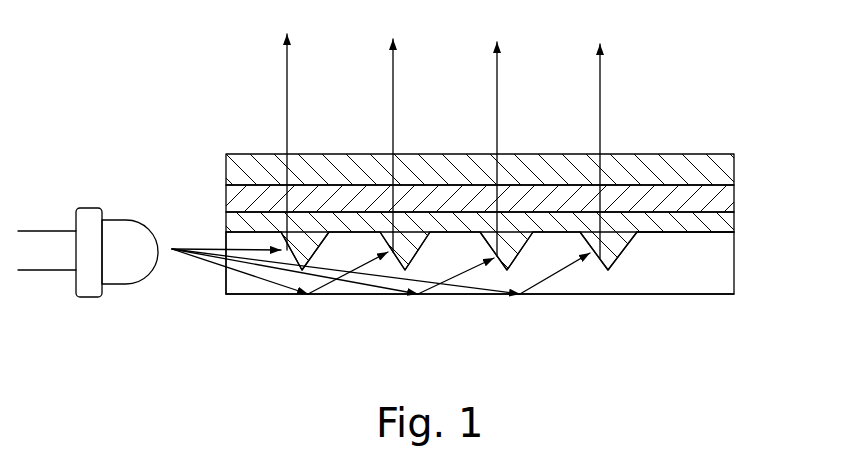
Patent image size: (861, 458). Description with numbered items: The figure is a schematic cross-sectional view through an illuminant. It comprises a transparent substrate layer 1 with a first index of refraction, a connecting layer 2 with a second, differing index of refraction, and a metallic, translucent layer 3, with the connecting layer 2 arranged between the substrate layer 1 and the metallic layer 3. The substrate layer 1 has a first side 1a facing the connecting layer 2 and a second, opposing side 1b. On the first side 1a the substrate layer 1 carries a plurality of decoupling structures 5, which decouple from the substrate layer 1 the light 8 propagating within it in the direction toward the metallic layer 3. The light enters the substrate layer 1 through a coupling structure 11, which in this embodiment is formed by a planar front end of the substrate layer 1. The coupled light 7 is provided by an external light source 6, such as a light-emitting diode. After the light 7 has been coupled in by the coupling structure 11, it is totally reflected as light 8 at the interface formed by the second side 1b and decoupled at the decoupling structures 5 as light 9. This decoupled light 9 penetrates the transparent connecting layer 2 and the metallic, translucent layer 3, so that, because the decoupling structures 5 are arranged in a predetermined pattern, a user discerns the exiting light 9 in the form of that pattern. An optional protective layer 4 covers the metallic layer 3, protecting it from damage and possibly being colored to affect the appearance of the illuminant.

The substrate layer 1 is at (740, 254).
The first side 1a is at (715, 242).
The second side 1b is at (718, 300).
The connecting layer 2 is at (740, 226).
The metallic, translucent layer 3 is at (740, 198).
The protective layer 4 is at (740, 170).
The decoupling structures 5 is at (630, 262).
The light source 6 is at (37, 292).
The coupled light 7 is at (202, 271).
The light propagating within the substrate layer 8 is at (573, 272).
The decoupled light 9 is at (281, 111).
The coupling structure 11 is at (218, 239).